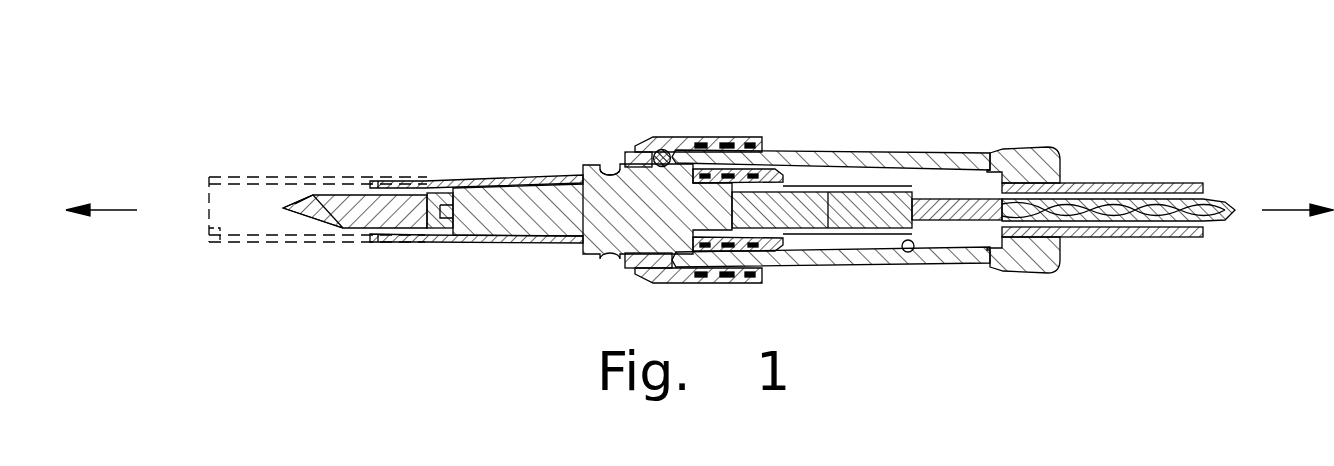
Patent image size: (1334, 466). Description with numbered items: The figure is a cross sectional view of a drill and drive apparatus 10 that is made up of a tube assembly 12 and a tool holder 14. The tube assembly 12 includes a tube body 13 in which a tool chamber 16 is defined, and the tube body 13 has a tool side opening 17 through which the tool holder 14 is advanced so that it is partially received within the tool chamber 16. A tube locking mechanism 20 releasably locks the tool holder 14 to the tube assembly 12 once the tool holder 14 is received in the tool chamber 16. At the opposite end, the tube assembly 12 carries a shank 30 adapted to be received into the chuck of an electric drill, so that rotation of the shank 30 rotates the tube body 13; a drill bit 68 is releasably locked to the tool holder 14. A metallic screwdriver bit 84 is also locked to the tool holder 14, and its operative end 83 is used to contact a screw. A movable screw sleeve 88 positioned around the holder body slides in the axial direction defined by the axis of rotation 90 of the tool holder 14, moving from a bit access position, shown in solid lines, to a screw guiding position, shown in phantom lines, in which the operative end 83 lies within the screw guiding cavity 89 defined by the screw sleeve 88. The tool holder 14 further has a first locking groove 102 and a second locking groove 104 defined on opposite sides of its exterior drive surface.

The drill and drive apparatus 10 is at (1122, 89).
The tube assembly 12 is at (937, 138).
The tube body 13 is at (1050, 155).
The tool holder 14 is at (498, 140).
The tool chamber 16 is at (908, 252).
The tool side opening 17 is at (612, 166).
The tube locking mechanism 20 is at (672, 110).
The shank 30 is at (1183, 183).
The drill bit 68 is at (1137, 217).
The operative end 83 is at (290, 208).
The screwdriver bit 84 is at (357, 202).
The screw sleeve 88 is at (298, 241).
The screw guiding cavity 89 is at (208, 240).
The axis of rotation 90 is at (112, 210).
The first locking groove 102 is at (672, 254).
The second locking groove 104 is at (605, 254).